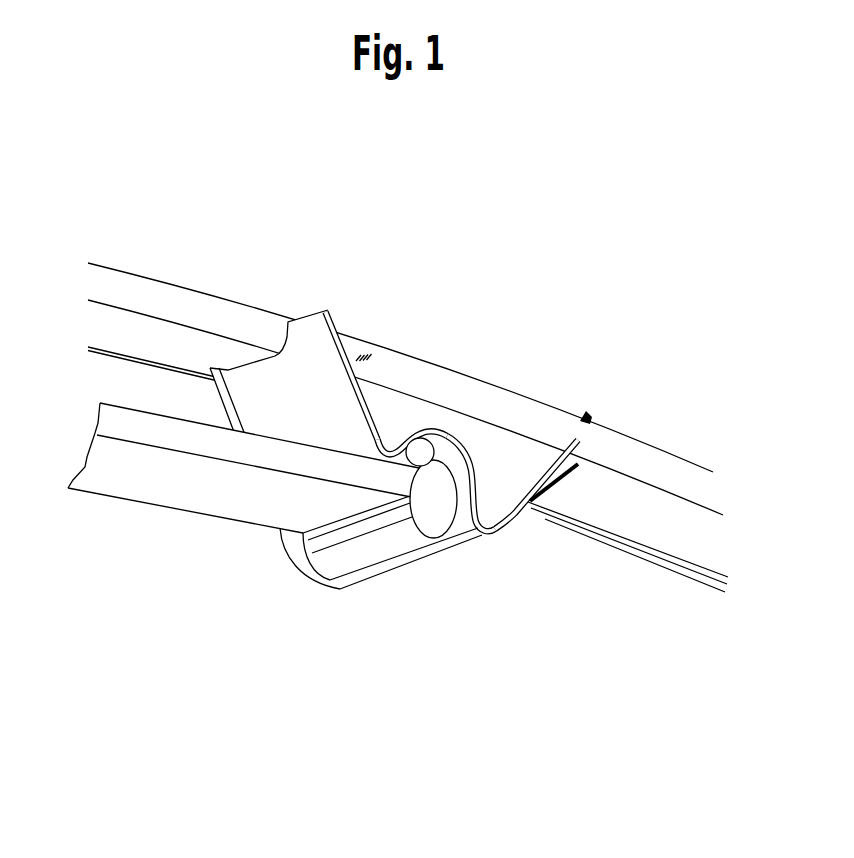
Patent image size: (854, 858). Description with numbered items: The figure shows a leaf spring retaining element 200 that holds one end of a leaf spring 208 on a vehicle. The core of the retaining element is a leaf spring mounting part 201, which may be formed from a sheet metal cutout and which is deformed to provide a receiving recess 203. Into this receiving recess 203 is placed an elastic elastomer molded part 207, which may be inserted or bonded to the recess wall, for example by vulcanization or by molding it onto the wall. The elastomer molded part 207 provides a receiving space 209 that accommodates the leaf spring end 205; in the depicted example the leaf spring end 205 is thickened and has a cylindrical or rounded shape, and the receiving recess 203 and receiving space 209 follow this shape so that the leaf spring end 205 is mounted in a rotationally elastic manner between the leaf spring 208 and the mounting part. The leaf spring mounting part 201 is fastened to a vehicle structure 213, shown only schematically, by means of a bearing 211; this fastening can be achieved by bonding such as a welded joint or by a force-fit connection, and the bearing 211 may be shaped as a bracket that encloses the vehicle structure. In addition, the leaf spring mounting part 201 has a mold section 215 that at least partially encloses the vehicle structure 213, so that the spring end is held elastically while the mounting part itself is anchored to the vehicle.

The leaf spring retaining element 200 is at (226, 584).
The leaf spring mounting part 201 is at (363, 353).
The receiving recess 203 is at (463, 482).
The leaf spring end 205 is at (433, 492).
The elastomer molded part 207 is at (474, 471).
The leaf spring 208 is at (118, 480).
The receiving space 209 is at (435, 429).
The bearing 211 is at (582, 477).
The vehicle structure 213 is at (655, 505).
The mold section 215 is at (310, 313).